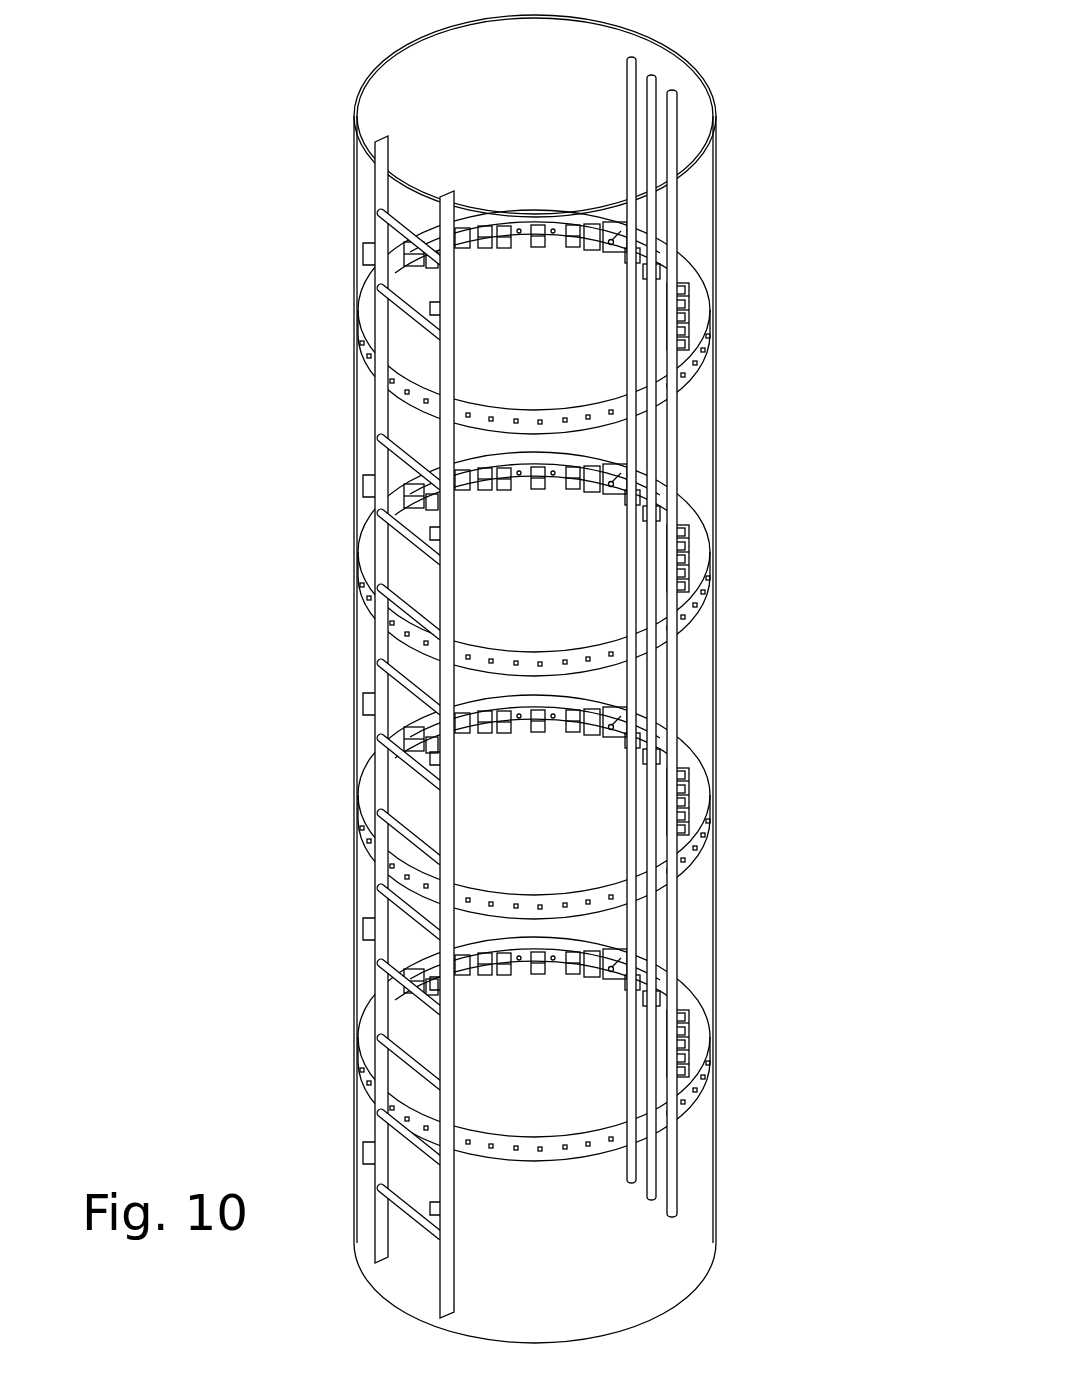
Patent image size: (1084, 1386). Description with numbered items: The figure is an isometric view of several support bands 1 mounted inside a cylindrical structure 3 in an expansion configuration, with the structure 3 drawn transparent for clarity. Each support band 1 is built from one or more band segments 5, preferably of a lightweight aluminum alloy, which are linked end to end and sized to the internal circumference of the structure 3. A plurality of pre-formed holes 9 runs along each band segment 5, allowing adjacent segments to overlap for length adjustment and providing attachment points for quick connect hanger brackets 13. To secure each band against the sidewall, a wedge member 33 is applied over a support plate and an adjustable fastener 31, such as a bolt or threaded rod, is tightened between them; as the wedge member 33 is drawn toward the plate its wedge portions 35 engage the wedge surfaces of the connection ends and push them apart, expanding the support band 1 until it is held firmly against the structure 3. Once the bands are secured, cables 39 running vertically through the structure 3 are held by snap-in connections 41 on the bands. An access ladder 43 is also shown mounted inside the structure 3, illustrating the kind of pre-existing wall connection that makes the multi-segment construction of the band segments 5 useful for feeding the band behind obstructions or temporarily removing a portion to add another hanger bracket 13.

The support band 1 is at (385, 848).
The structure 3 is at (592, 1256).
The band segment 5 is at (688, 365).
The holes 9 is at (525, 322).
The quick connect hanger bracket 13 is at (408, 490).
The adjustable fastener 31 is at (627, 723).
The wedge member 33 is at (630, 477).
The wedge portions 35 is at (677, 978).
The cables 39 is at (672, 927).
The snap-in connection 41 is at (437, 745).
The access ladder 43 is at (382, 1158).